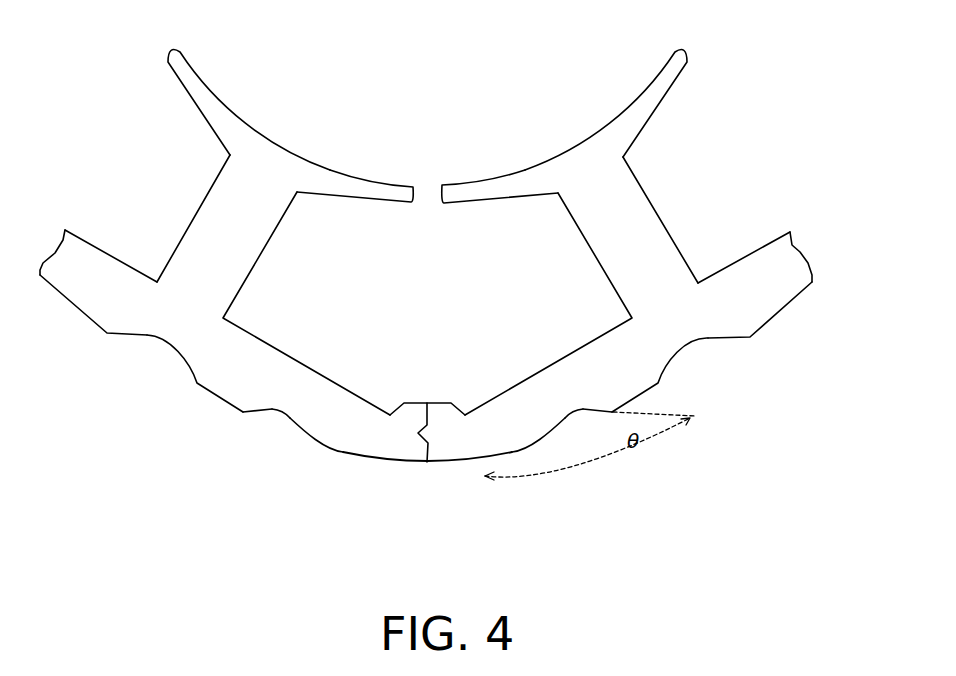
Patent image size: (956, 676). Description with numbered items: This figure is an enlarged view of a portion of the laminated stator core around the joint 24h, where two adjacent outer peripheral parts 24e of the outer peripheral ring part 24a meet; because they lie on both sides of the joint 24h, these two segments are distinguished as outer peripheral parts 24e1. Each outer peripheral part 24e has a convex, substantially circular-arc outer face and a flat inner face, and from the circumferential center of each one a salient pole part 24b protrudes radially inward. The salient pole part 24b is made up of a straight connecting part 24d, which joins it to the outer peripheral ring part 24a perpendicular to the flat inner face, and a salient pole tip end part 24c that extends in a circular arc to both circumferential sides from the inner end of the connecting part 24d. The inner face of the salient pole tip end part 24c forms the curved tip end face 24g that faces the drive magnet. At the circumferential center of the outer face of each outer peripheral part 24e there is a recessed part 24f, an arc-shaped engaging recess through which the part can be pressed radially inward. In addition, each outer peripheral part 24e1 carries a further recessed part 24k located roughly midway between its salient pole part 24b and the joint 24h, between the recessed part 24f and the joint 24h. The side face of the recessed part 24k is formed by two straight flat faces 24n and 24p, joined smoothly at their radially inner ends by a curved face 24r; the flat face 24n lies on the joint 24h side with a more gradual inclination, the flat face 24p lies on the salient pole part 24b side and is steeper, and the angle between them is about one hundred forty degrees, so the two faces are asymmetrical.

The outer peripheral ring part 24a is at (452, 463).
The salient pole part 24b is at (427, 303).
The salient pole tip end part 24c is at (190, 97).
The connecting part 24d is at (263, 250).
The outer peripheral part 24e is at (434, 330).
The outer peripheral part (first outer peripheral part) 24e1 is at (426, 256).
The recessed part 24f is at (162, 340).
The tip end face 24g is at (352, 175).
The joint 24h is at (417, 463).
The recessed part 24k is at (439, 485).
The flat face 24n is at (431, 470).
The flat face 24p is at (255, 415).
The curved face 24r is at (272, 415).